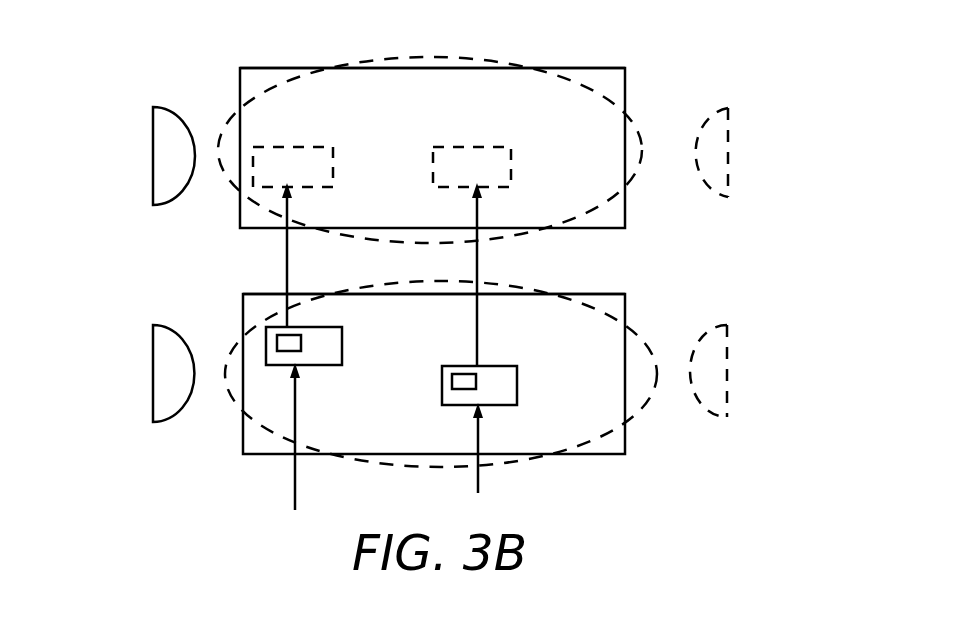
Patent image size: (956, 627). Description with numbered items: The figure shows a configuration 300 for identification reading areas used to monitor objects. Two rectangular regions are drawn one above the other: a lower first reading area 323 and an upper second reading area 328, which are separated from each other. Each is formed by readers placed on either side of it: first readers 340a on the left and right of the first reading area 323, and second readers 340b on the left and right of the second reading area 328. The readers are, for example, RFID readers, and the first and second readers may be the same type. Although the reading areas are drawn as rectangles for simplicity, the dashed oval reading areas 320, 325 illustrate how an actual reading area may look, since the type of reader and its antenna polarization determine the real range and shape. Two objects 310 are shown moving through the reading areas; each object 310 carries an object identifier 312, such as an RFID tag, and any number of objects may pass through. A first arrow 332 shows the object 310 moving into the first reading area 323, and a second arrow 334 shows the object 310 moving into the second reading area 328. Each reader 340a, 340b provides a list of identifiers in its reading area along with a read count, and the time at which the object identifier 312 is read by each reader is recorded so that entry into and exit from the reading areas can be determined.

The configuration 300 is at (465, 30).
The object 310 is at (330, 158).
The object identifier 312 is at (277, 343).
The reading area 320 is at (625, 415).
The first reading area 323 is at (625, 315).
The reading area 325 is at (625, 190).
The second reading area 328 is at (625, 80).
The first arrow 332 is at (295, 493).
The second arrow 334 is at (287, 272).
The first reader 340a is at (153, 370).
The second reader 340b is at (153, 150).